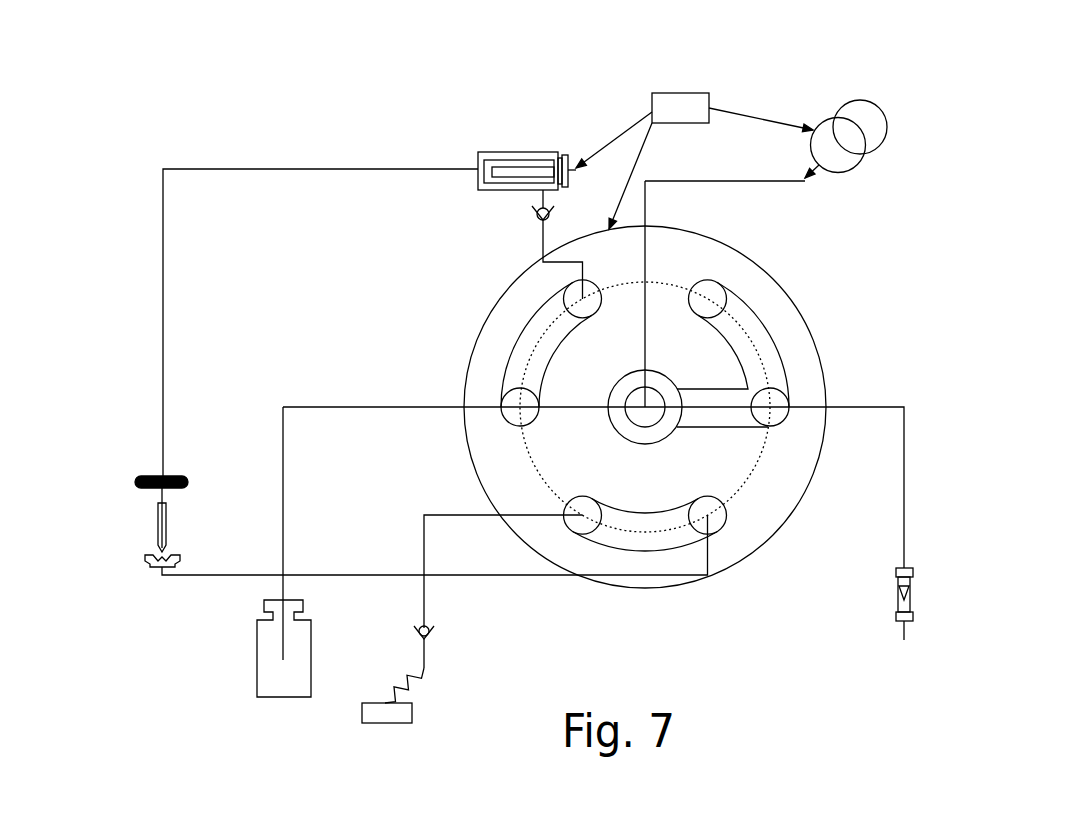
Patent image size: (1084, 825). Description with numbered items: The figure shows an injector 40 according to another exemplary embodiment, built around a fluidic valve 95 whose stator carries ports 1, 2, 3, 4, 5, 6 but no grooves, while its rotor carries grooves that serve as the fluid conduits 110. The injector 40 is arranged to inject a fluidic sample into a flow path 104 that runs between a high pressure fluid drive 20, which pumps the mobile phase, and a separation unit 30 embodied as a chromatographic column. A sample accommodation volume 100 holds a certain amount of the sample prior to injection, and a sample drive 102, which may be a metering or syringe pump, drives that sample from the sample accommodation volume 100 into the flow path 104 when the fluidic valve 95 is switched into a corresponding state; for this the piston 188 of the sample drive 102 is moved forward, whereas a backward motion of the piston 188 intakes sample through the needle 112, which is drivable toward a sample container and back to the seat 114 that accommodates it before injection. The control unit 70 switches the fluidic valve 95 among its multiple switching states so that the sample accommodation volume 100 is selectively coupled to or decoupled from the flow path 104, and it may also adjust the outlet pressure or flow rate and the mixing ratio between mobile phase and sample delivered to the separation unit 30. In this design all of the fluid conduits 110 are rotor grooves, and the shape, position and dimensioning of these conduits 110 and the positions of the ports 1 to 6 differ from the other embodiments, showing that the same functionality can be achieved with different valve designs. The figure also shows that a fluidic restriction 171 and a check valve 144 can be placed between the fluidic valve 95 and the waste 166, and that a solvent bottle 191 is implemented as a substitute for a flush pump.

The high pressure fluid drive 20 is at (857, 100).
The separation unit 30 is at (896, 580).
The injector 40 is at (262, 158).
The control unit 70 is at (677, 93).
The fluidic valve 95 is at (665, 228).
The sample accommodation volume 100 is at (176, 476).
The sample drive 102 is at (515, 152).
The flow path 104 is at (792, 185).
The fluid conduits 110 is at (553, 338).
The needle 112 is at (153, 523).
The seat 114 is at (145, 556).
The check valve 144 is at (433, 634).
The waste 166 is at (412, 712).
The fluidic restriction 171 is at (410, 680).
The piston 188 is at (505, 174).
The solvent bottle 191 is at (257, 656).
The port 1 is at (645, 420).
The port 2 is at (572, 291).
The port 3 is at (508, 401).
The port 4 is at (572, 523).
The port 5 is at (715, 523).
The port 6 is at (748, 360).